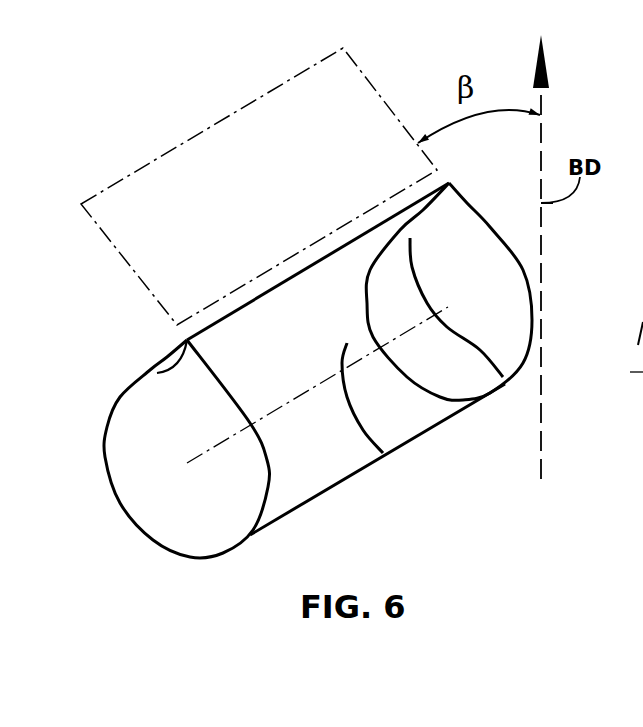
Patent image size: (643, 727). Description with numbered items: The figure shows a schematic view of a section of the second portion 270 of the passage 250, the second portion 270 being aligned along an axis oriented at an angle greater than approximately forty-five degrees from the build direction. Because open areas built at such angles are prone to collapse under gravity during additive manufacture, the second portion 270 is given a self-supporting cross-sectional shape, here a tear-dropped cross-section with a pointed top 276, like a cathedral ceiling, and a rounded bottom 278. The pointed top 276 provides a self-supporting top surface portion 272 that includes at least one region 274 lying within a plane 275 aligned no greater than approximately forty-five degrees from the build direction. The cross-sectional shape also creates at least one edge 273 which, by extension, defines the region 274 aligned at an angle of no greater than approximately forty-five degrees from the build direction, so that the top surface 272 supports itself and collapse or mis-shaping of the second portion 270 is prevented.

The passage 250 is at (552, 128).
The second portion 270 is at (341, 401).
The self-supporting top surface portion 272 is at (383, 453).
The edge 273 is at (486, 226).
The region 274 is at (503, 377).
The plane 275 is at (238, 160).
The pointed top 276 is at (156, 372).
The rounded bottom 278 is at (192, 557).